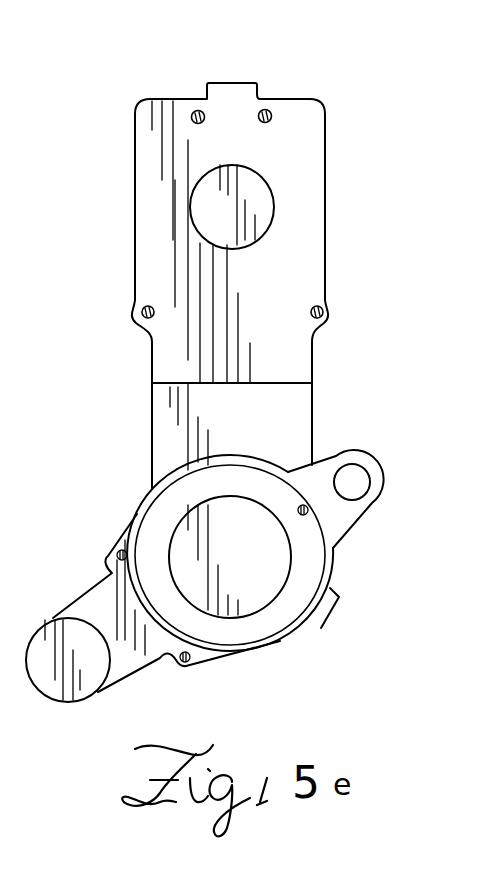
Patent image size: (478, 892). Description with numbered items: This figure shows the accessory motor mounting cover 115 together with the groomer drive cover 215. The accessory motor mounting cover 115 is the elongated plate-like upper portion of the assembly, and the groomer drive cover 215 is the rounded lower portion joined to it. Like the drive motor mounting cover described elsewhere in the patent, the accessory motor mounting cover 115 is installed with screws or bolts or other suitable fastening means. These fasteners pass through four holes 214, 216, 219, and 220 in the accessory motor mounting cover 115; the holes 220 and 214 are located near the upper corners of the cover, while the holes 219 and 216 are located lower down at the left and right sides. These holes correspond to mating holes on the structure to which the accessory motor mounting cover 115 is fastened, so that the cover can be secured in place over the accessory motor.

The accessory motor mounting cover 115 is at (313, 163).
The hole 214 is at (272, 111).
The groomer drive cover 215 is at (248, 635).
The hole 216 is at (323, 310).
The hole 219 is at (137, 314).
The hole 220 is at (193, 111).